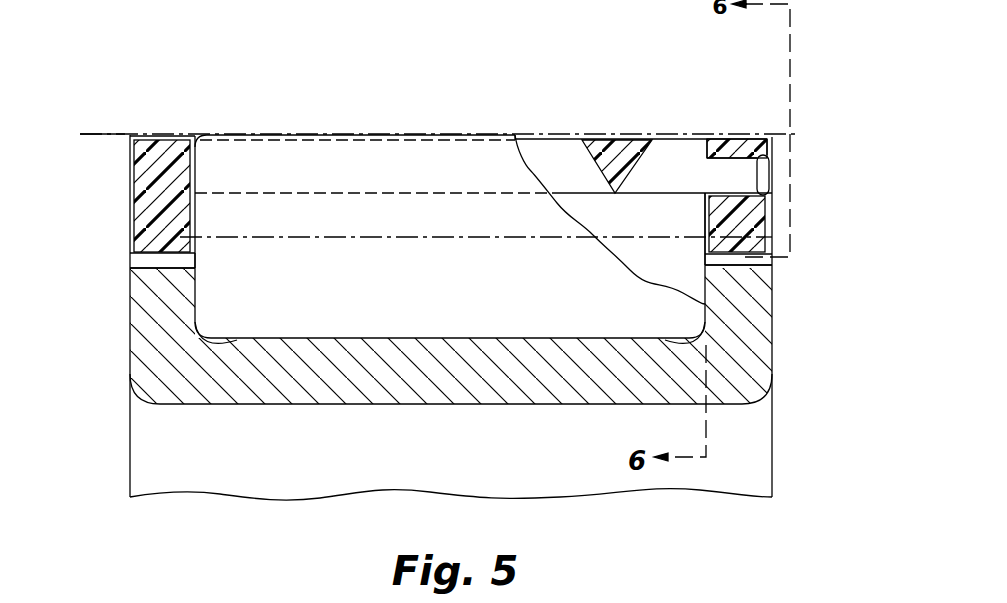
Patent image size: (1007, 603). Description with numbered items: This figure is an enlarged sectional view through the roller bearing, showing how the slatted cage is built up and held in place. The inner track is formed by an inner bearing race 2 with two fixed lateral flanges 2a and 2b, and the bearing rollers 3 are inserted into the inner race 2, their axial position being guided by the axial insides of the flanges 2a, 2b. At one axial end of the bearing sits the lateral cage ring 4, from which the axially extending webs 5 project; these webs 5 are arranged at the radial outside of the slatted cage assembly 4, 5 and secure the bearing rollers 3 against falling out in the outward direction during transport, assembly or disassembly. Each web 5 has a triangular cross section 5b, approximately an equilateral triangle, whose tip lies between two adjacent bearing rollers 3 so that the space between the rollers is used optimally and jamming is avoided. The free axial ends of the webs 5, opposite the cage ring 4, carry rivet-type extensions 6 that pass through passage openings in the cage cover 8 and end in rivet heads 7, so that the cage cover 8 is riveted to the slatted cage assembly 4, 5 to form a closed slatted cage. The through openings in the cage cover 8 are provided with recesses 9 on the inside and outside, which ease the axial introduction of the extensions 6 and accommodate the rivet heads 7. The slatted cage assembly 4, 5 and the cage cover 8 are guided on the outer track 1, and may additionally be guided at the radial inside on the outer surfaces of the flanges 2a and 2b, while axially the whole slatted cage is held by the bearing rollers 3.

The outer track 1 is at (98, 136).
The inner bearing race 2 is at (308, 383).
The lateral flange 2a is at (163, 265).
The lateral flange 2b is at (733, 270).
The bearing roller 3 is at (427, 316).
The cage ring 4 is at (148, 207).
The web 5 is at (662, 148).
The cross section of the cage web 5b is at (622, 157).
The extension 6 is at (710, 176).
The rivet head 7 is at (763, 181).
The cage cover 8 is at (745, 226).
The recess 9 is at (715, 152).